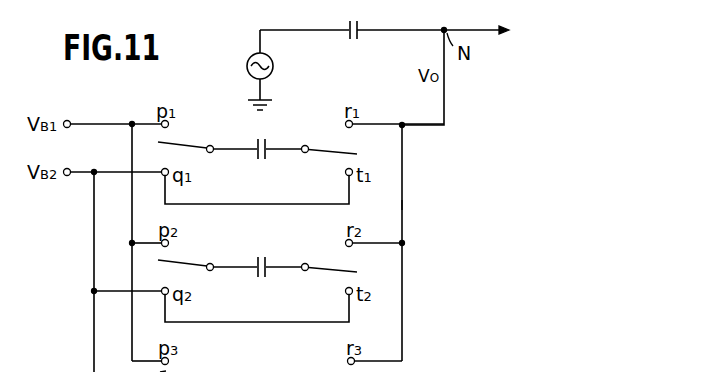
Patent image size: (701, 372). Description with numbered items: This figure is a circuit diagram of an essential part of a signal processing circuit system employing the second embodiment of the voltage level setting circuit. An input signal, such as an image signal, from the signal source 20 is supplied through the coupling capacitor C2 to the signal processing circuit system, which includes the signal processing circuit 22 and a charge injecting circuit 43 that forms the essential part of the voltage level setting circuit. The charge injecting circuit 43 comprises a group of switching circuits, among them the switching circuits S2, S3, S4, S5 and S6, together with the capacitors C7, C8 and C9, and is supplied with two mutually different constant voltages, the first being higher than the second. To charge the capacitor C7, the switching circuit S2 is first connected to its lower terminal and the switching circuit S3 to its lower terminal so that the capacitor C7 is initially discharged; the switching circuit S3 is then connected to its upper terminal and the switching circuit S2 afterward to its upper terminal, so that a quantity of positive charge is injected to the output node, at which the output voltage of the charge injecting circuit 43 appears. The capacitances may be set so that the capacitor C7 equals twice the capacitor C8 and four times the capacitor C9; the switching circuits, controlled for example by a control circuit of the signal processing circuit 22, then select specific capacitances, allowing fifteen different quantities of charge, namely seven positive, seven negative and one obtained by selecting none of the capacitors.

The signal source 20 is at (246, 64).
The signal processing circuit 22 is at (555, 48).
The charge injecting circuit 43 is at (417, 215).
The coupling capacitor C2 is at (352, 43).
The capacitor C7 is at (258, 139).
The capacitor C8 is at (258, 255).
The capacitor C9 is at (268, 362).
The switching circuit S2 is at (189, 143).
The switching circuit S3 is at (324, 147).
The switching circuit S4 is at (189, 260).
The switching circuit S5 is at (323, 270).
The switching circuit S6 is at (188, 371).